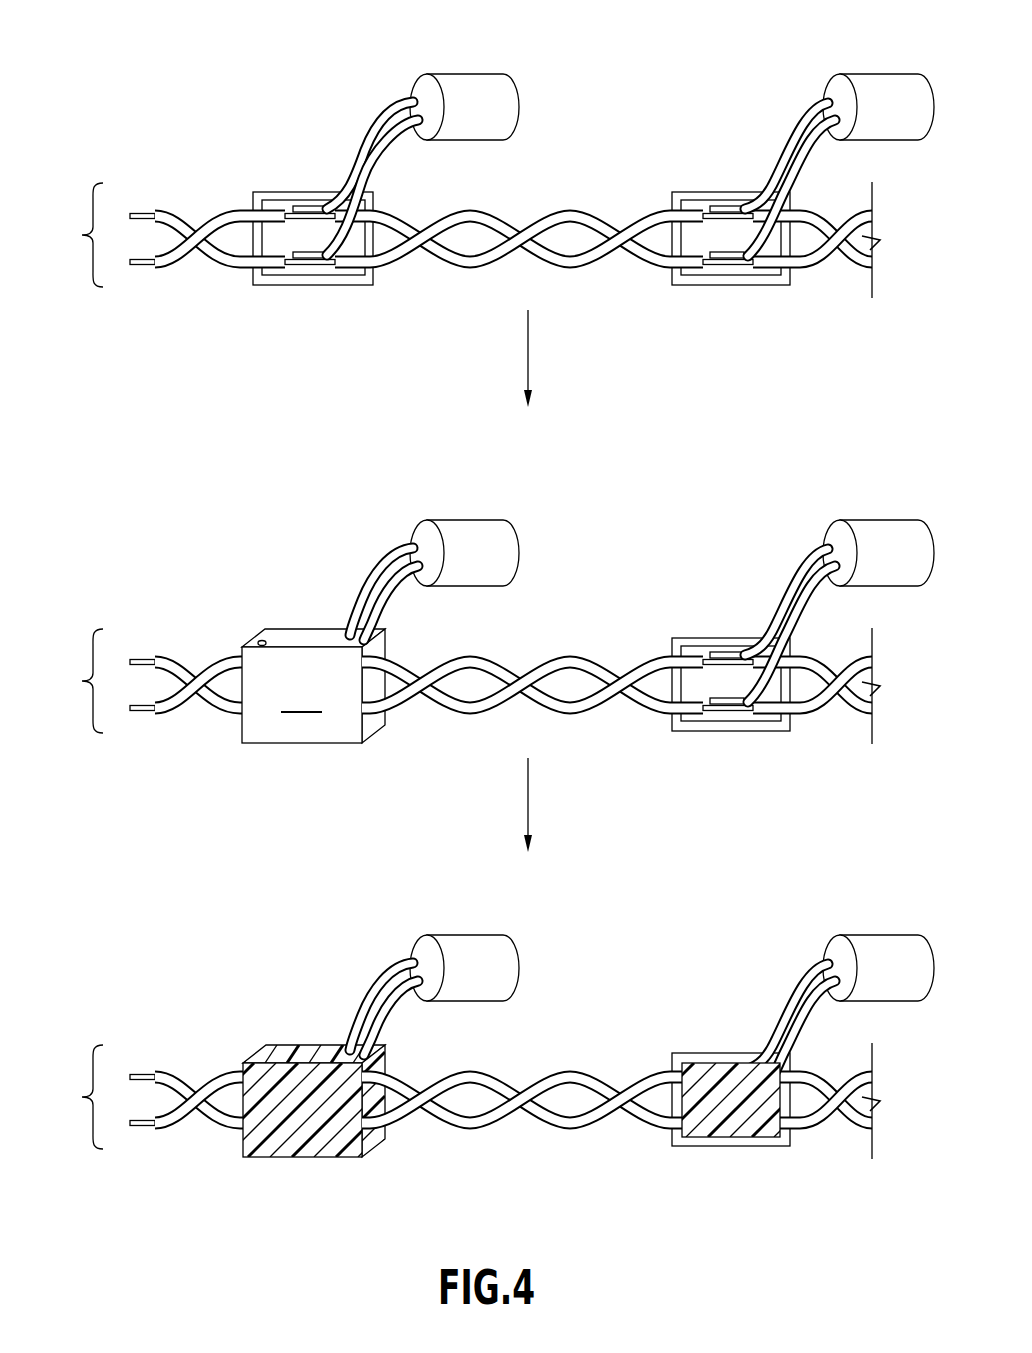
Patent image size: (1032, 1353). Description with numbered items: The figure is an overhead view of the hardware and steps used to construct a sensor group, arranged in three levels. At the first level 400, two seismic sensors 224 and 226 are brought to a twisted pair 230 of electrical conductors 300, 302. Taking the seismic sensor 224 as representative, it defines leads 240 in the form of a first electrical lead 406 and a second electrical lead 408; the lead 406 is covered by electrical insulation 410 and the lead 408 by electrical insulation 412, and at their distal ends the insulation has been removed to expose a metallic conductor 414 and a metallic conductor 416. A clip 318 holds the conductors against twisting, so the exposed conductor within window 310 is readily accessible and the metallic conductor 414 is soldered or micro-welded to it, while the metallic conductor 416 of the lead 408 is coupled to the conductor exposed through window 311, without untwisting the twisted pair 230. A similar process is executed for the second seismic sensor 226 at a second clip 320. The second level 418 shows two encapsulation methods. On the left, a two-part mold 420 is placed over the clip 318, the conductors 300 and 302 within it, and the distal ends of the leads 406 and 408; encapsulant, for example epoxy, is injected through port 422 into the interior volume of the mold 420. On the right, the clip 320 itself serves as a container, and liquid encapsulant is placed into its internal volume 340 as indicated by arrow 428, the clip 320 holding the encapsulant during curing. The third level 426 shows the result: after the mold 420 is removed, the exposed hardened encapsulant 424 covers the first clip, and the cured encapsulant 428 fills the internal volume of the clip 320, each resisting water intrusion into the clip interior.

The seismic sensor 224 is at (482, 73).
The second seismic sensor 226 is at (858, 73).
The twisted pair 230 is at (270, 306).
The leads 240 is at (352, 100).
The electrical conductor 300 is at (176, 712).
The electrical conductor 302 is at (188, 662).
The window 310 is at (283, 237).
The window 311 is at (350, 284).
The clip 318 is at (256, 198).
The second clip 320 is at (698, 195).
The internal volume 340 is at (728, 274).
The first level 400 is at (82, 235).
The first electrical lead 406 is at (400, 103).
The second electrical lead 408 is at (393, 138).
The electrical insulation 410 is at (372, 150).
The electrical insulation 412 is at (380, 163).
The metallic conductor 414 is at (302, 207).
The metallic conductor 416 is at (304, 262).
The second level 418 is at (82, 681).
The mold 420 is at (313, 686).
The port 422 is at (266, 640).
The encapsulant 424 is at (275, 1045).
The third level 426 is at (82, 1097).
The encapsulant 428 is at (713, 680).